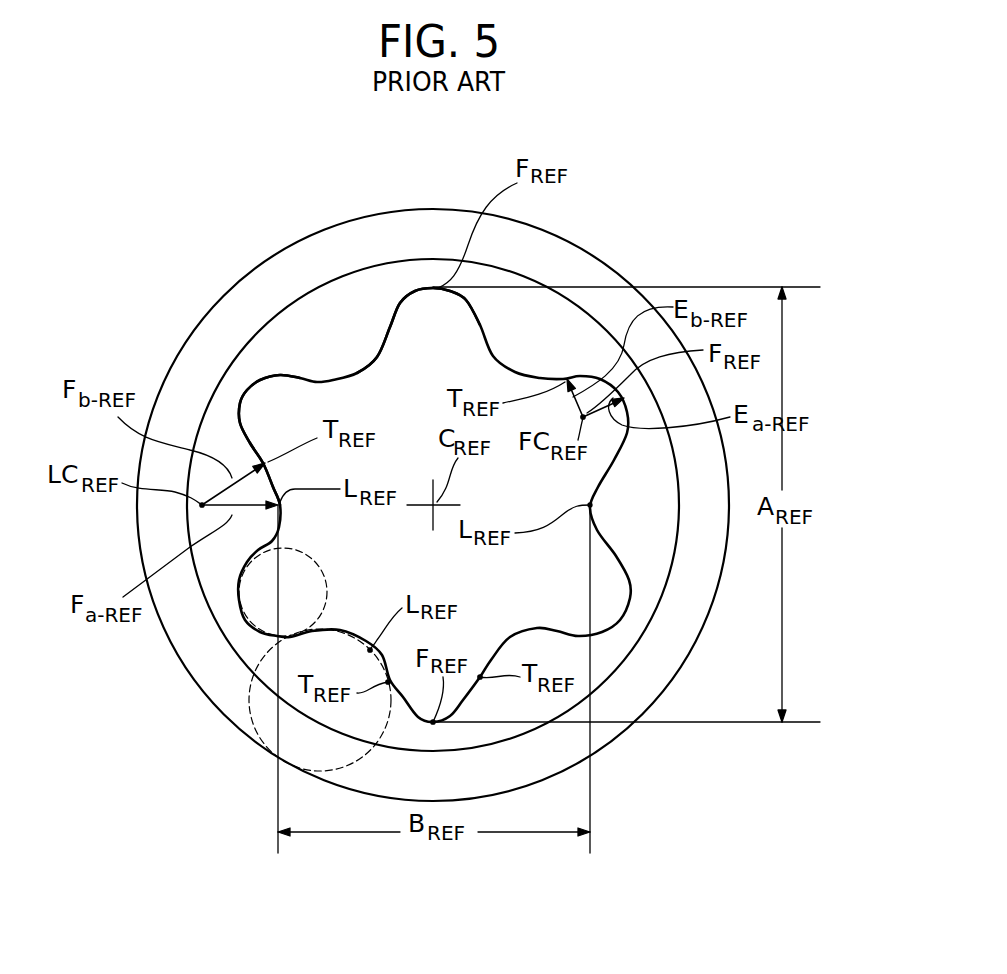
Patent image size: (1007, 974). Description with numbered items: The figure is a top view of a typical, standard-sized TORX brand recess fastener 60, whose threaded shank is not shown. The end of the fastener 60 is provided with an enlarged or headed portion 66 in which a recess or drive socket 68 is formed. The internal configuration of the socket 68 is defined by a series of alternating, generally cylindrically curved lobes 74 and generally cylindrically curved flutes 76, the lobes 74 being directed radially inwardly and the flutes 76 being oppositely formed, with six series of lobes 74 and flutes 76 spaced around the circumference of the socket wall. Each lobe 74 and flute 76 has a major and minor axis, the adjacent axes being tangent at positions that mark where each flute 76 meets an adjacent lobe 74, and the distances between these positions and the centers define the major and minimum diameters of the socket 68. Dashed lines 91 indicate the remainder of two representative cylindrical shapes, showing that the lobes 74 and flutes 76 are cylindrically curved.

The fastener 60 is at (600, 262).
The headed portion 66 is at (515, 258).
The socket 68 is at (492, 378).
The lobes 74 is at (352, 370).
The flutes 76 is at (240, 397).
The dashed lines 91 is at (327, 592).